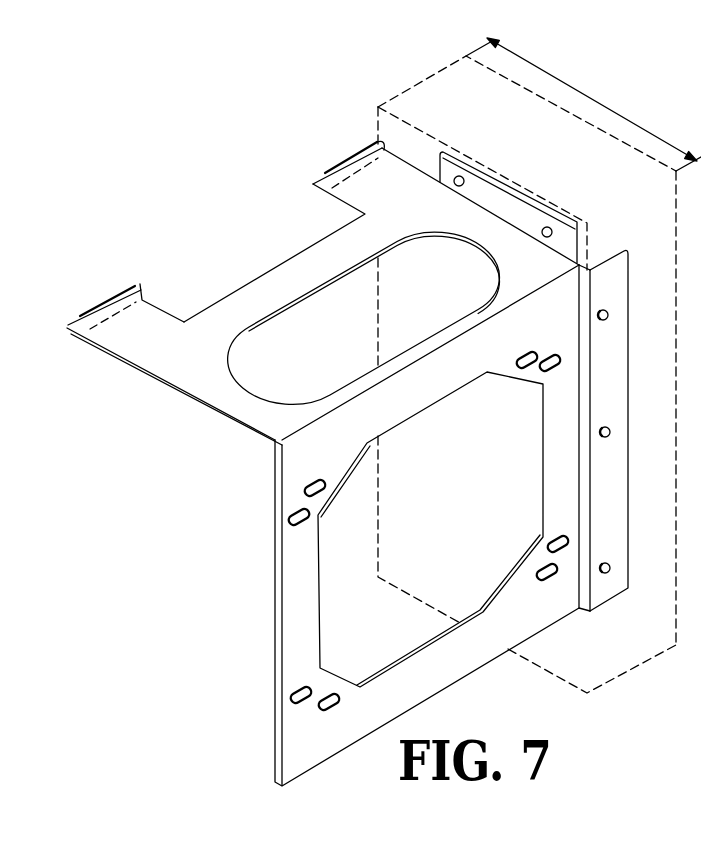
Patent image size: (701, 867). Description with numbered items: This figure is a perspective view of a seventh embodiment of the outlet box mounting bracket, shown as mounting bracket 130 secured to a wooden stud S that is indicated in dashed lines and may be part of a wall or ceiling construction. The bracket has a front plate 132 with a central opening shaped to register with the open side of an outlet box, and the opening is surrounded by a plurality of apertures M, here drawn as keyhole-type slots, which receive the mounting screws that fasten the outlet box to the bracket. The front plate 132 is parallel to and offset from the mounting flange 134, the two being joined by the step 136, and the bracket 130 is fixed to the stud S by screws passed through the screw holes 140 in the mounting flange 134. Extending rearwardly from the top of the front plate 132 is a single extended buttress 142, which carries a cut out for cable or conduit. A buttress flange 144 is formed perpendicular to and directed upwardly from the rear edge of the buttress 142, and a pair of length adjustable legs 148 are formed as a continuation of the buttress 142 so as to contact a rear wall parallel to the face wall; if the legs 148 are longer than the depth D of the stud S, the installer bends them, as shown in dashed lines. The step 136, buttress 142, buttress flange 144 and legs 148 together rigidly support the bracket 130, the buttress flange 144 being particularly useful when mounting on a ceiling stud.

The mounting bracket 130 is at (275, 578).
The front plate 132 is at (363, 410).
The mounting flange 134 is at (608, 364).
The step 136 is at (582, 298).
The screw holes 140 is at (608, 315).
The buttress 142 is at (162, 365).
The buttress flange 144 is at (498, 195).
The legs 148 is at (313, 182).
The apertures M is at (310, 515).
The stud S is at (400, 93).
The depth of stud D is at (583, 104).